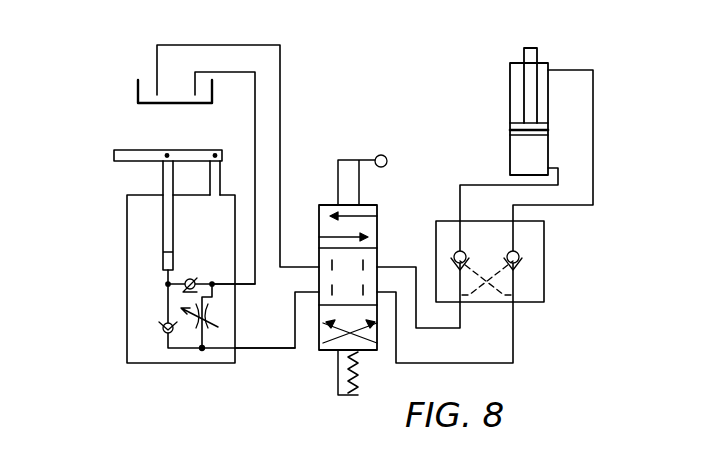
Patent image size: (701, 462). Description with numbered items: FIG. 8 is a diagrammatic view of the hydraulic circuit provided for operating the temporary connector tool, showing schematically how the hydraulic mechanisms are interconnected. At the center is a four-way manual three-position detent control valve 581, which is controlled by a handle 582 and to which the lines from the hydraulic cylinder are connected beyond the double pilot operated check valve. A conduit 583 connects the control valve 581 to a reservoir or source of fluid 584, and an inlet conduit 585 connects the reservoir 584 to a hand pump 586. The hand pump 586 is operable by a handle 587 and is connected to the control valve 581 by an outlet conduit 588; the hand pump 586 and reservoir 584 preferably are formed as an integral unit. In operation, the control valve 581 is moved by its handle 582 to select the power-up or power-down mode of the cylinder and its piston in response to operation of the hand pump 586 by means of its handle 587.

The control valve 581 is at (328, 356).
The handle 582 is at (402, 138).
The conduit 583 is at (282, 92).
The reservoir 584 is at (137, 90).
The inlet conduit 585 is at (254, 126).
The hand pump 586 is at (127, 302).
The handle 587 is at (145, 151).
The outlet conduit 588 is at (267, 350).